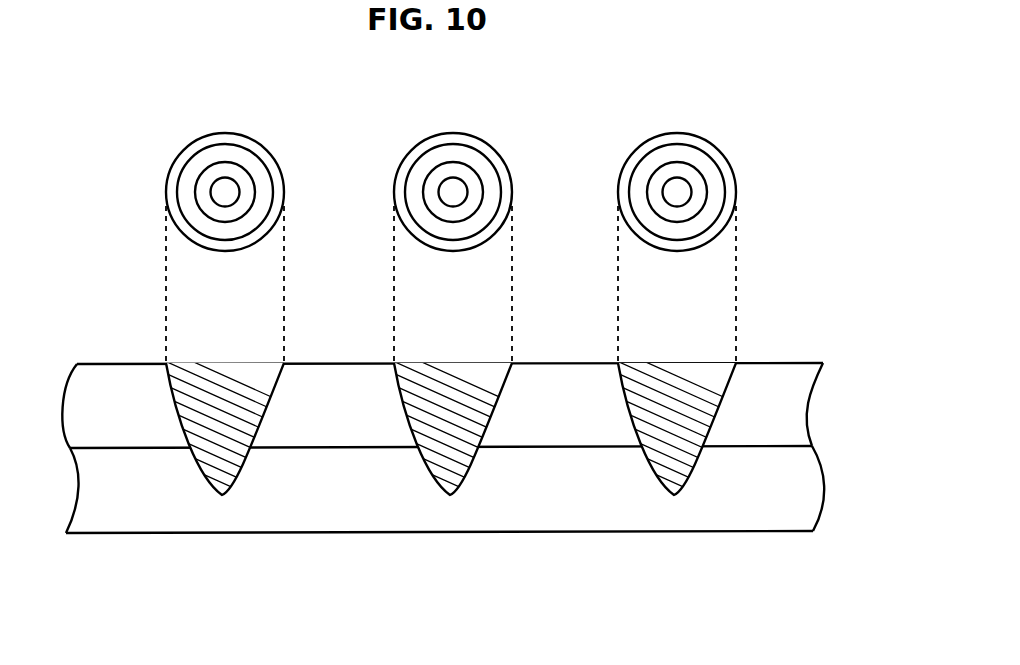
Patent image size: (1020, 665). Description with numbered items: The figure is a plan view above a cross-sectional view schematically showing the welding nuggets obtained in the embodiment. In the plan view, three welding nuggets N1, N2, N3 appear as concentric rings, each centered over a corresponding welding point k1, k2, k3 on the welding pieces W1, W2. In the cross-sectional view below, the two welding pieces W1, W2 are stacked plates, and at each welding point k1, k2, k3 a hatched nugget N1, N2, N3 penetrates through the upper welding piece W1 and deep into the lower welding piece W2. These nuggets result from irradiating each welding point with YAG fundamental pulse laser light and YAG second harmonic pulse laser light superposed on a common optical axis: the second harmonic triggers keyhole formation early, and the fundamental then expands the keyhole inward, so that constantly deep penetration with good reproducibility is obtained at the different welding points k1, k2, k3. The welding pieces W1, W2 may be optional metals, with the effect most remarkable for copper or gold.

The welding nugget N1 is at (225, 134).
The welding nugget N2 is at (455, 133).
The welding nugget N3 is at (680, 133).
The welding piece W1 is at (780, 367).
The welding piece W2 is at (782, 518).
The welding point k1 is at (226, 422).
The welding point k2 is at (454, 422).
The welding point k3 is at (678, 422).